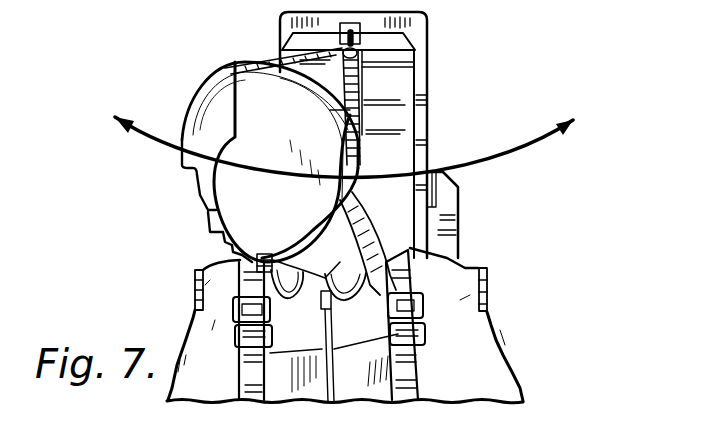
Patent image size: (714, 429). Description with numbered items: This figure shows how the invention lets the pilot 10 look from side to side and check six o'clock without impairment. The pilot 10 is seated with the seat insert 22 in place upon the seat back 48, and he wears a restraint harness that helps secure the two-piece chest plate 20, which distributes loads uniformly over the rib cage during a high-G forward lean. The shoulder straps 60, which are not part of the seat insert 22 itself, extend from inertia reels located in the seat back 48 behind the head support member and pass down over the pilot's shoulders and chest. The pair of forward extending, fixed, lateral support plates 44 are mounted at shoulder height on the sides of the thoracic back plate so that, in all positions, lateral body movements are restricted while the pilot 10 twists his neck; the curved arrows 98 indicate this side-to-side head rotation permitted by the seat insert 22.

The pilot 10 is at (497, 345).
The two-piece chest plate 20 is at (287, 372).
The seat insert 22 is at (377, 80).
The lateral support plates 44 is at (195, 283).
The seat back 48 is at (347, 48).
The shoulder straps 60 is at (463, 247).
The arrows 98 is at (513, 150).